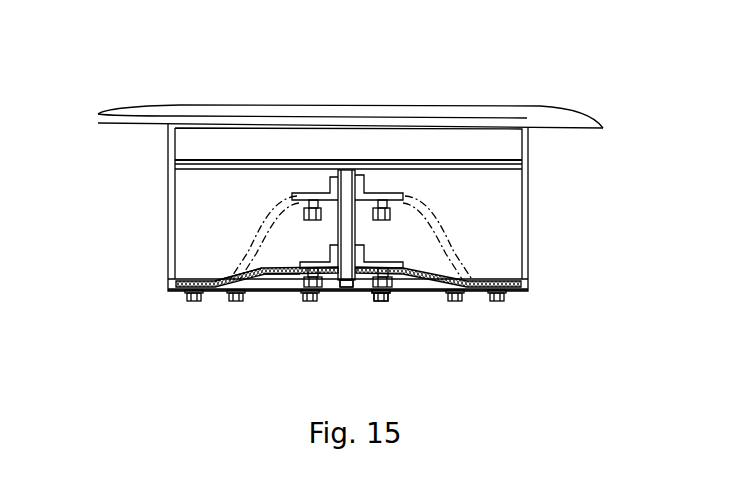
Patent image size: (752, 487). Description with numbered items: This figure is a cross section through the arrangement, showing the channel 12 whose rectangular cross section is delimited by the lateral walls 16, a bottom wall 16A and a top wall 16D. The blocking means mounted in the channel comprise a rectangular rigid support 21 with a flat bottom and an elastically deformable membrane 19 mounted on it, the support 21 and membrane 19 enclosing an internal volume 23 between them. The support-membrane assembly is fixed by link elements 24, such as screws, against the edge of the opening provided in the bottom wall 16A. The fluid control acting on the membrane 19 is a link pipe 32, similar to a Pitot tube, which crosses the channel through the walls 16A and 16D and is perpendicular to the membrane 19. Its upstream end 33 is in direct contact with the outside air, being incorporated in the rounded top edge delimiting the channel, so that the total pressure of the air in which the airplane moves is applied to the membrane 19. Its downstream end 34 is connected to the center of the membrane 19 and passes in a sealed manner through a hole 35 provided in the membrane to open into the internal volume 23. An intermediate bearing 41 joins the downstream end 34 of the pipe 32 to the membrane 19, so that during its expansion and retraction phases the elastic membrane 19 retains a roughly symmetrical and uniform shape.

The channel 12 is at (502, 227).
The lateral walls 16 is at (158, 226).
The bottom wall 16A is at (500, 282).
The top wall 16D is at (274, 160).
The membrane 19 is at (260, 294).
The support 21 is at (420, 293).
The internal volume 23 is at (287, 290).
The link elements 24 is at (455, 302).
The link pipe 32 is at (341, 228).
The upstream end 33 is at (352, 170).
The downstream end 34 is at (352, 292).
The hole 35 is at (369, 293).
The intermediate bearing 41 is at (368, 258).